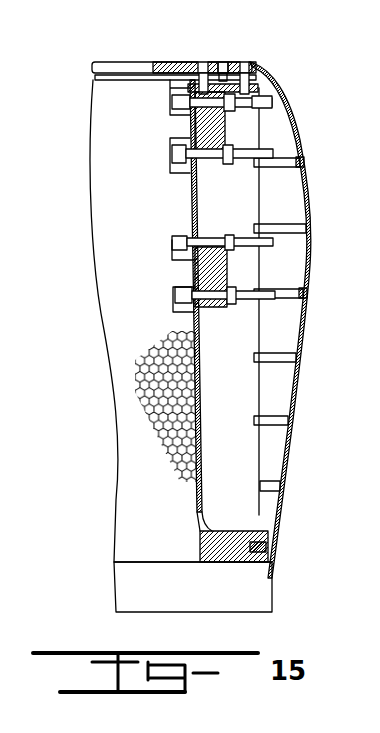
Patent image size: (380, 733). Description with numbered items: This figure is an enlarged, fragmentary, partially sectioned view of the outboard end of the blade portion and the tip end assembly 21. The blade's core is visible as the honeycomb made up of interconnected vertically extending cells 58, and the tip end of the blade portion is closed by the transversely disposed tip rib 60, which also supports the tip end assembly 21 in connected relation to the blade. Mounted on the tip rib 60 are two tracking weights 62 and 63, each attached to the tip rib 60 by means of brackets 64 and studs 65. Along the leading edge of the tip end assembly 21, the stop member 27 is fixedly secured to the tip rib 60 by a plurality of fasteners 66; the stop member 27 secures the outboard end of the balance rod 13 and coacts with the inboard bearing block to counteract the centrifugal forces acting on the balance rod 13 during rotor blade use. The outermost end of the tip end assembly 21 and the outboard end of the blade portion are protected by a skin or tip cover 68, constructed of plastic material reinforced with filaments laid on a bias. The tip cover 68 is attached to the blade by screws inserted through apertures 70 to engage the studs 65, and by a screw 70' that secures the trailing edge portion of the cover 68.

The balance rod 13 is at (107, 70).
The fasteners 66 is at (204, 64).
The stop member 27 is at (224, 68).
The apertures 70 is at (318, 189).
The brackets 64 is at (178, 113).
The tracking weight 62 is at (213, 136).
The studs 65 is at (212, 156).
The tip cover 68 is at (294, 196).
The tracking weight 63 is at (224, 274).
The vertically extending cells 58 is at (143, 389).
The tip rib 60 is at (201, 465).
The tip end assembly 21 is at (308, 450).
The screw 70' is at (293, 552).